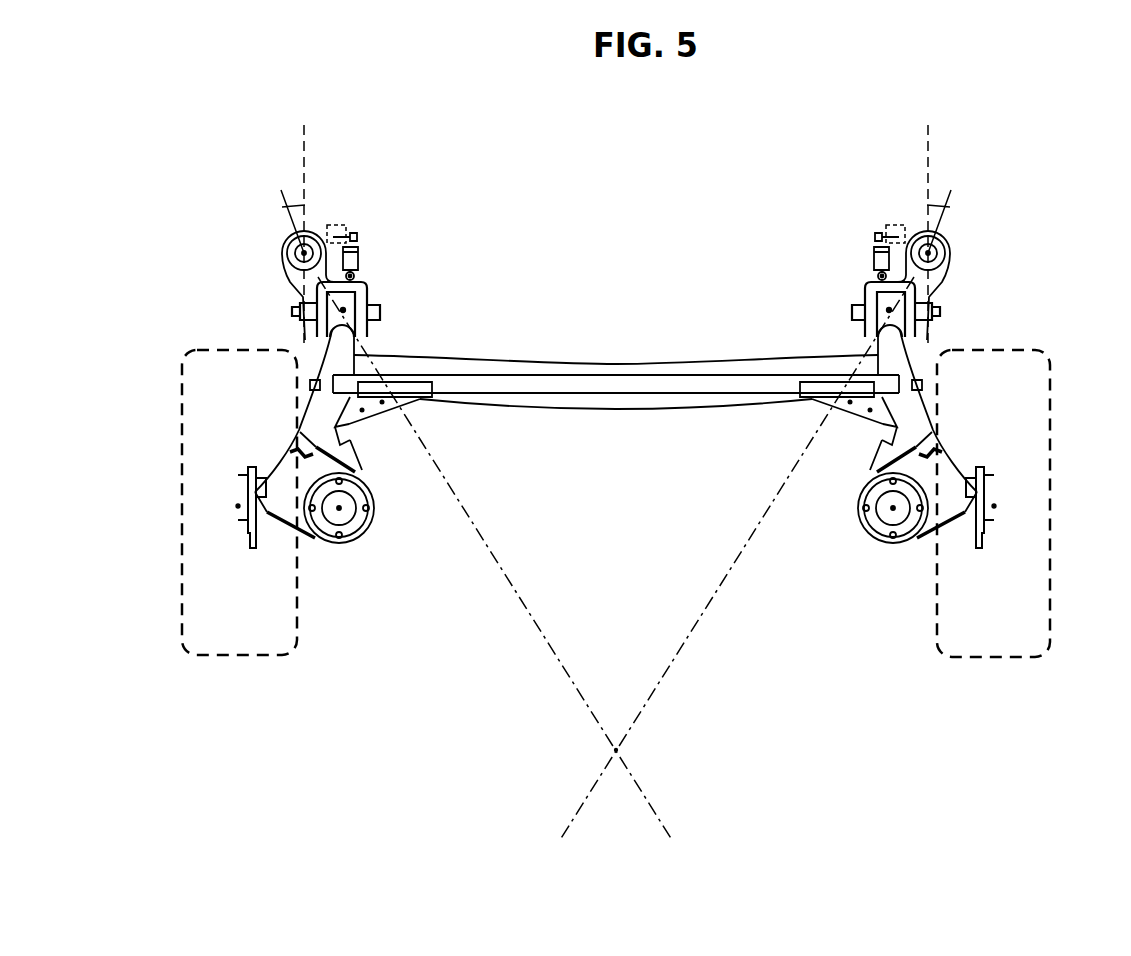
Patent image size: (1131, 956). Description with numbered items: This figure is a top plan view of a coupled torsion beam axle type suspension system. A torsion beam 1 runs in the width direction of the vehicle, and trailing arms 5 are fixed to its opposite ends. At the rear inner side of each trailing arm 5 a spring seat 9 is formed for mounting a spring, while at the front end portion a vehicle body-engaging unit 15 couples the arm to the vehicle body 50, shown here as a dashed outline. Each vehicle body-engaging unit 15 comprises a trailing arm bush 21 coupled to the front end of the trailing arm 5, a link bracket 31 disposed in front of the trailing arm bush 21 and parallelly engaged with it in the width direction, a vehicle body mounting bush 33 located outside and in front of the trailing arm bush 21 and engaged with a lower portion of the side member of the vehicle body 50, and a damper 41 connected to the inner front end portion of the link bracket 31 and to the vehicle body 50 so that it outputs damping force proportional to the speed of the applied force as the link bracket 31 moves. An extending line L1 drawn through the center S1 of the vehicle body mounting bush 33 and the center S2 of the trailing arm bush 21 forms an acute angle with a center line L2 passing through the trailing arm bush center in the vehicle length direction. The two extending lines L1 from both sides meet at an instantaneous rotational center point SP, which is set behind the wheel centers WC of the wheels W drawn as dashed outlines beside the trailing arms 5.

The torsion beam 1 is at (613, 407).
The trailing arm 5 is at (343, 434).
The spring seat 9 is at (372, 523).
The vehicle body-engaging unit 15 is at (260, 226).
The trailing arm bush 21 is at (378, 303).
The link bracket 31 is at (285, 279).
The vehicle body mounting bush 33 is at (312, 225).
The damper 41 is at (362, 262).
The vehicle body 50 is at (342, 225).
The extending line L1 is at (543, 640).
The center line L2 is at (305, 153).
The center of the vehicle body mounting bush S1 is at (290, 252).
The center of the trailing arm bush S2 is at (344, 310).
The instantaneous rotational center point SP is at (630, 752).
The wheel W is at (245, 658).
The wheel center WC is at (237, 512).